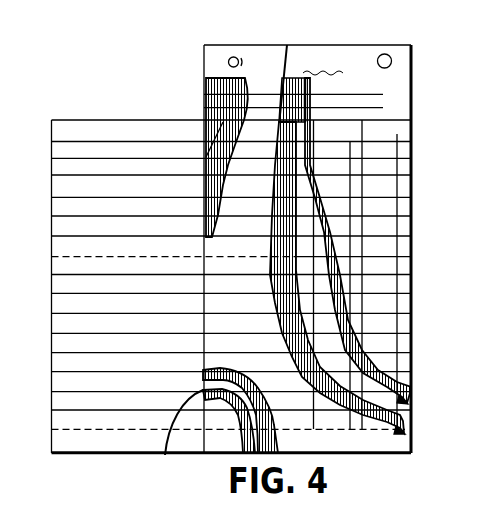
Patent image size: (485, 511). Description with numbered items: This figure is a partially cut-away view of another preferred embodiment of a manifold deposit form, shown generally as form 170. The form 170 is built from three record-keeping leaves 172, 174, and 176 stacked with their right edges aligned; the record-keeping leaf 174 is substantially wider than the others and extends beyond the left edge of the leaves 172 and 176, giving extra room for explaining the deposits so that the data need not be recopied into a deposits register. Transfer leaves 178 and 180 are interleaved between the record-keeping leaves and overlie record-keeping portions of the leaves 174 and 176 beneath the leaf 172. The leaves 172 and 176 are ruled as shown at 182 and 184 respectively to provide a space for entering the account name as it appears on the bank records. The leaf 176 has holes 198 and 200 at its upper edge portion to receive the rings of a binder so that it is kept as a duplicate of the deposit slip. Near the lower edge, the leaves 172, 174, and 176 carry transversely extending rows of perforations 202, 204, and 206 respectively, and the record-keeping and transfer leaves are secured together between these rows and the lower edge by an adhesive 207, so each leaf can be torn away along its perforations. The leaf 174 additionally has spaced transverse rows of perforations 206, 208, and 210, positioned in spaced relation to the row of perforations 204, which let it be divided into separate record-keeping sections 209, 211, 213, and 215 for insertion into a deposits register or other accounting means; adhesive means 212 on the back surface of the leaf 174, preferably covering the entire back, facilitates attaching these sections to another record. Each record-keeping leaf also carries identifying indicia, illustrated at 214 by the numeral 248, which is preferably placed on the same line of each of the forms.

The manifold deposit form 170 is at (125, 88).
The record-keeping leaf 172 is at (252, 60).
The record-keeping leaf 174 is at (50, 233).
The record-keeping leaf 176 is at (407, 62).
The transfer leaf 178 is at (278, 172).
The transfer leaf 180 is at (221, 99).
The ruling 182 is at (285, 96).
The ruling 184 is at (377, 95).
The hole 198 is at (379, 50).
The hole 200 is at (228, 60).
The row of perforations 202 is at (325, 438).
The row of perforations 204 is at (142, 429).
The row of perforations 206 is at (142, 177).
The adhesive 207 is at (406, 433).
The row of perforations 208 is at (137, 258).
The record-keeping section 209 is at (62, 147).
The row of perforations 210 is at (87, 354).
The record-keeping section 211 is at (70, 218).
The adhesive means 212 is at (408, 401).
The record-keeping section 213 is at (63, 290).
The identifying indicia 214 is at (84, 120).
The record-keeping section 215 is at (61, 382).
The numeral 248 is at (70, 131).